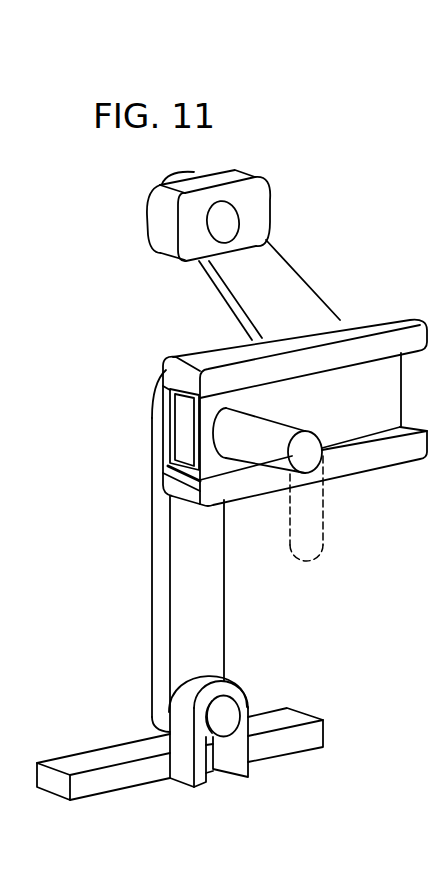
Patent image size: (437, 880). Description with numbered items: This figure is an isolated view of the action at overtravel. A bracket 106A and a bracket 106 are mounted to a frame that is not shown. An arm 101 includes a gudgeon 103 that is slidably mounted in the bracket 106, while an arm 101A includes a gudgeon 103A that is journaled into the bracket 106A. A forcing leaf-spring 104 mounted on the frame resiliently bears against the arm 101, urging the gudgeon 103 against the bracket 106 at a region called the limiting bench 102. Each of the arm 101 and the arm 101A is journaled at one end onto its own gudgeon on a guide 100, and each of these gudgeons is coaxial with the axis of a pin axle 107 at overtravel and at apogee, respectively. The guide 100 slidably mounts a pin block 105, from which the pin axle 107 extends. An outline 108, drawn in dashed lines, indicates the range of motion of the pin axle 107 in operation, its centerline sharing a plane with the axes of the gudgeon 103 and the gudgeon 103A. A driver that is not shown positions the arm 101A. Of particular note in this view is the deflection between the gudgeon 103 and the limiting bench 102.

The guide 100 is at (365, 411).
The arm 101 is at (213, 605).
The arm 101A is at (300, 306).
The limiting bench 102 is at (223, 688).
The gudgeon 103 is at (223, 718).
The gudgeon 103A is at (223, 221).
The forcing leaf-spring 104 is at (130, 770).
The pin block 105 is at (211, 417).
The bracket 106 is at (203, 682).
The bracket 106A is at (253, 210).
The pin axle 107 is at (247, 440).
The outline 108 is at (323, 535).